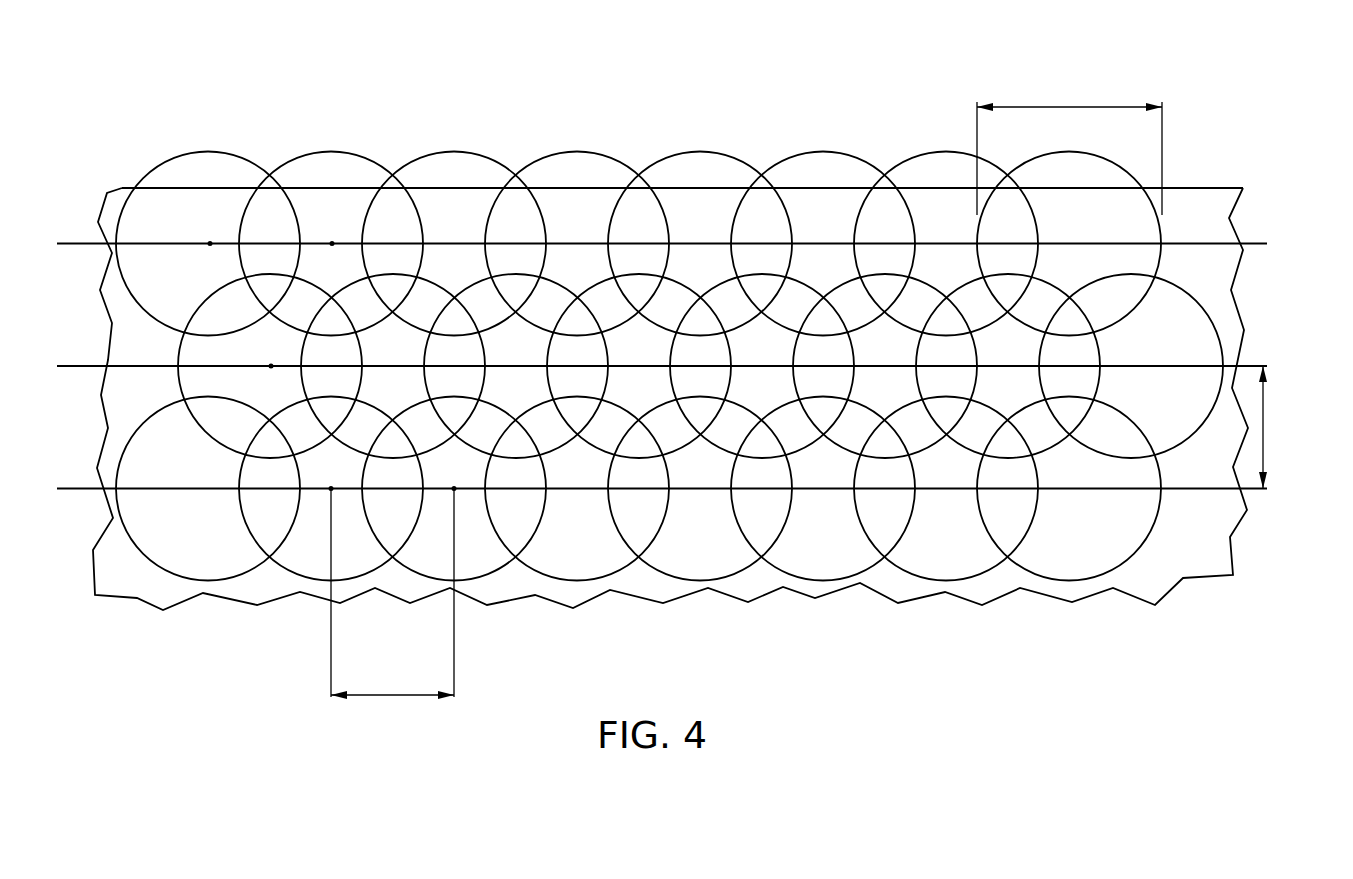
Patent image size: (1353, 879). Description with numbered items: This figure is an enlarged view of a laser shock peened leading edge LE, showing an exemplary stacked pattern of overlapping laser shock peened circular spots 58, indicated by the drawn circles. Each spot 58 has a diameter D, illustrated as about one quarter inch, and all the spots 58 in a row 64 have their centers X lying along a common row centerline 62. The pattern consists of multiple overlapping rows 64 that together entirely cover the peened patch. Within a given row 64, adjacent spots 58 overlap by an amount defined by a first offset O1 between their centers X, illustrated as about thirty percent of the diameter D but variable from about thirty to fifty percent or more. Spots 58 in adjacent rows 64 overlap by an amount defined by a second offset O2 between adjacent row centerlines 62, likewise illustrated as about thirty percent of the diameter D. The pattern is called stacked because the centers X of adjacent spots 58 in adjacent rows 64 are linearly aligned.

The laser shock peened circular spots 58 is at (343, 153).
The row centerline 62 is at (1262, 244).
The row of overlapping laser shock peened circular spots 64 is at (651, 356).
The leading edge LE is at (1257, 188).
The diameter D is at (1068, 102).
The first offset O1 is at (395, 697).
The second offset O2 is at (1265, 427).
The centers X is at (210, 243).